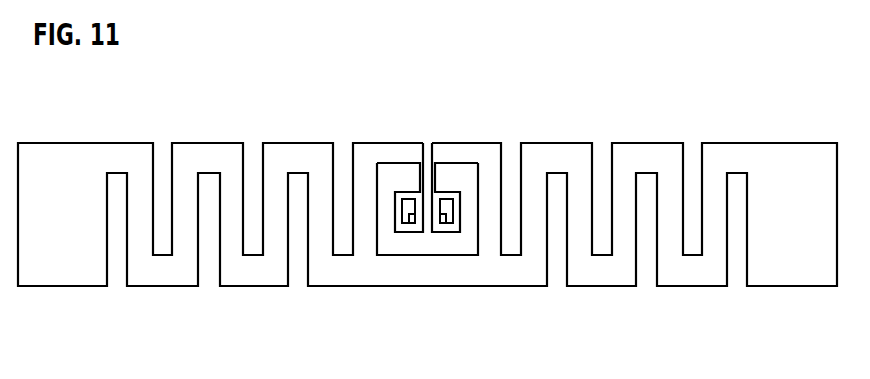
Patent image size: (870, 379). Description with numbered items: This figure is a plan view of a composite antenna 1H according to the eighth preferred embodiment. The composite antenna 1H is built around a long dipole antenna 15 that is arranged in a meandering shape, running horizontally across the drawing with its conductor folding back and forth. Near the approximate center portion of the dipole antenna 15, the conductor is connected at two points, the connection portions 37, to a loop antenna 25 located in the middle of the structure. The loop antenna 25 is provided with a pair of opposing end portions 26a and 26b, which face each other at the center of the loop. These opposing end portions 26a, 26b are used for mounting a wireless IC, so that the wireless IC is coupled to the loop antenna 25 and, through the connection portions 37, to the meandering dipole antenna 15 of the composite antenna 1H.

The composite antenna 1H is at (68, 103).
The dipole antenna 15 is at (577, 143).
The loop antenna 25 is at (441, 183).
The end portion 26a is at (413, 212).
The end portion 26b is at (440, 213).
The connection portions 37 is at (365, 247).